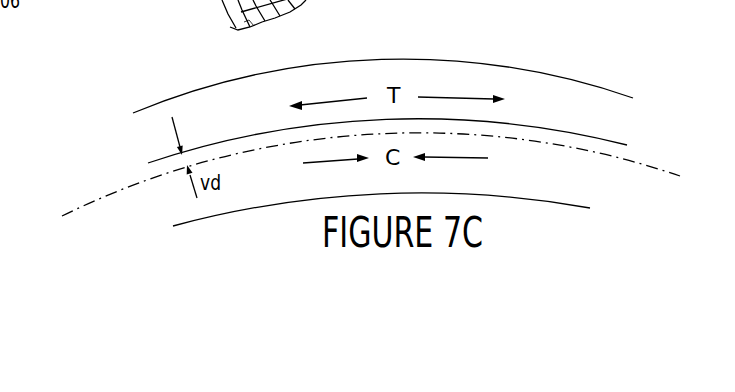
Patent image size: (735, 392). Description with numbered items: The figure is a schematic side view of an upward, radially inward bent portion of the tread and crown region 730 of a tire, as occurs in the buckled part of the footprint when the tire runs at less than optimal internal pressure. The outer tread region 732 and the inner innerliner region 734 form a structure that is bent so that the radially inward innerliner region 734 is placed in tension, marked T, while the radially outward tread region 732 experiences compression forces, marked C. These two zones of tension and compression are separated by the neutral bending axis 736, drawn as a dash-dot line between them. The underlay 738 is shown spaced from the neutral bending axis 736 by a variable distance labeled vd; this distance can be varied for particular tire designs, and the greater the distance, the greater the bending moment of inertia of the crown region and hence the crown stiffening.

The tread and crown region 730 is at (474, 47).
The tread region 732 is at (530, 201).
The innerliner region 734 is at (565, 78).
The neutral bending axis 736 is at (91, 201).
The underlay 738 is at (241, 138).